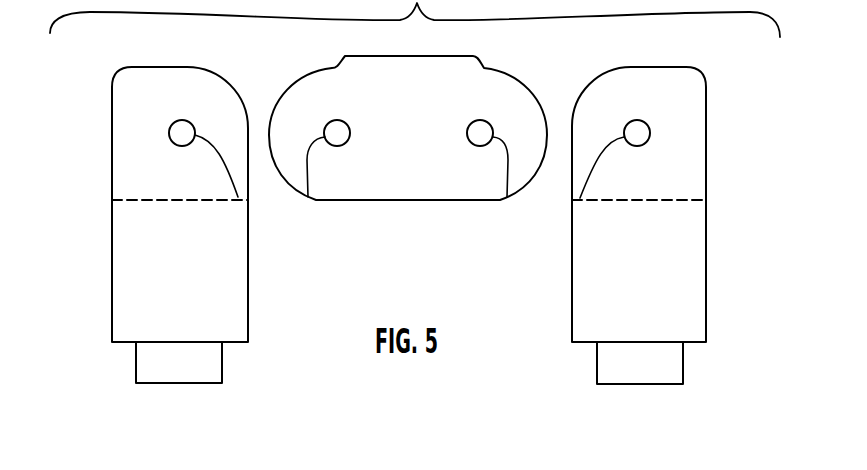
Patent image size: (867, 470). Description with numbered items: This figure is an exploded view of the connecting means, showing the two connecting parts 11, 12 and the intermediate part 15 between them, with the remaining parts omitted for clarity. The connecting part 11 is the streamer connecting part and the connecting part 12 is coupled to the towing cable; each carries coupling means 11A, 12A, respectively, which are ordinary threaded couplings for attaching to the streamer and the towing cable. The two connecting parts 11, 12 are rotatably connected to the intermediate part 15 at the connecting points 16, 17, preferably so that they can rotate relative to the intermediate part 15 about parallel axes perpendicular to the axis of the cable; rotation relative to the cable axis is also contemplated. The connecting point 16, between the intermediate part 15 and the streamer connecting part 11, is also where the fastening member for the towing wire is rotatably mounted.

The connecting part 11 is at (706, 300).
The coupling means 11A is at (638, 385).
The connecting part 12 is at (112, 270).
The coupling means 12A is at (168, 383).
The intermediate part 15 is at (408, 200).
The connecting point 16 is at (580, 198).
The connecting point 17 is at (307, 196).